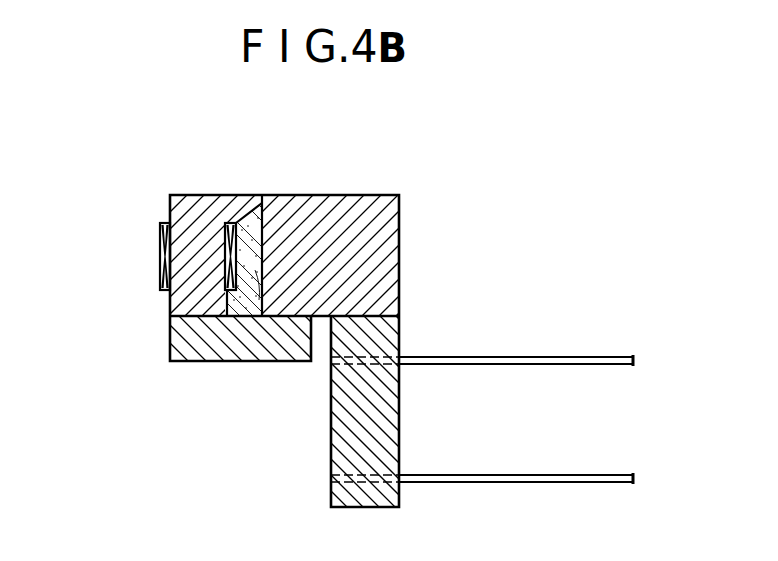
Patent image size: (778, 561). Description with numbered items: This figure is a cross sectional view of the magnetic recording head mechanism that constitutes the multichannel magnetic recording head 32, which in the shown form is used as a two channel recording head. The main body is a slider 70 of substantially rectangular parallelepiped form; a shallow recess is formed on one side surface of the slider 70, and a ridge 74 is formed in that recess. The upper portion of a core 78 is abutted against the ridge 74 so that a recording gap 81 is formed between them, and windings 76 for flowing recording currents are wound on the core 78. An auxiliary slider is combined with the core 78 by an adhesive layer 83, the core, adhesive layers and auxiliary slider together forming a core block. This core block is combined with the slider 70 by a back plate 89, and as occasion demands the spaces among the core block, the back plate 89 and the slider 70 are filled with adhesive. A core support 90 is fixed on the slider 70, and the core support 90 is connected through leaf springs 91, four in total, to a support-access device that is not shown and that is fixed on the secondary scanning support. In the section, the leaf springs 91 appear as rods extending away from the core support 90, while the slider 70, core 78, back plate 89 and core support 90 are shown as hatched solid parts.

The multichannel magnetic recording head 32 is at (120, 188).
The slider 70 is at (365, 220).
The ridge 74 is at (259, 300).
The windings 76 is at (160, 262).
The core 78 is at (192, 202).
The recording gap 81 is at (262, 188).
The adhesive layer 83 is at (240, 298).
The back plate 89 is at (188, 335).
The core support 90 is at (347, 442).
The leaf spring 91 is at (515, 357).